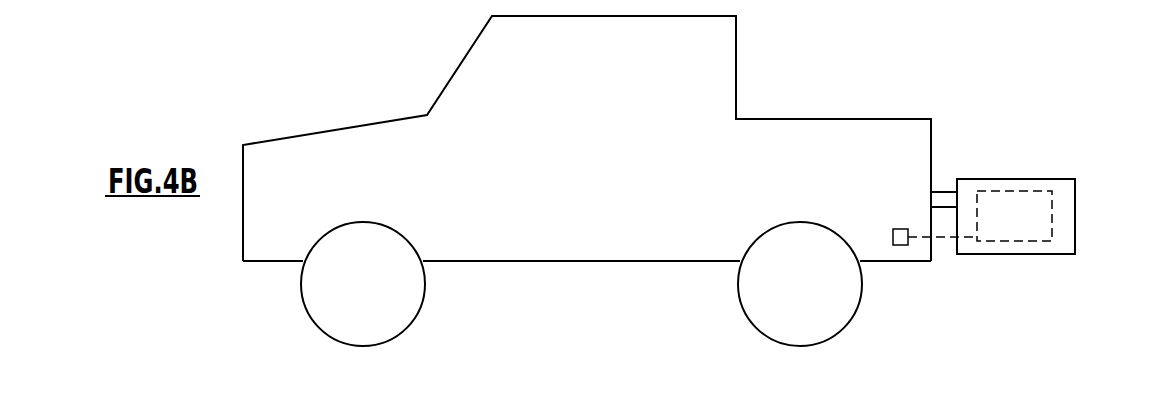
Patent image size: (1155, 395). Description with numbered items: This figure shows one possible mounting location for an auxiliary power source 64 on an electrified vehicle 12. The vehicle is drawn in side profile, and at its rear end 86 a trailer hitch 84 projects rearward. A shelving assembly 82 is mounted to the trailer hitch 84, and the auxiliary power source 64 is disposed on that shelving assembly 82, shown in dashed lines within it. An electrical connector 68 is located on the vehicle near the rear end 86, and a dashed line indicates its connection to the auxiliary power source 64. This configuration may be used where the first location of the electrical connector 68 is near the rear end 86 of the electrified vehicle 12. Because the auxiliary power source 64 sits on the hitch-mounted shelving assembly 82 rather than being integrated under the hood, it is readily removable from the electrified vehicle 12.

The electrified vehicle 12 is at (432, 67).
The rear end 86 is at (857, 105).
The trailer hitch 84 is at (943, 197).
The shelving assembly 82 is at (1086, 199).
The auxiliary power source 64 is at (1027, 241).
The electrical connector 68 is at (900, 245).